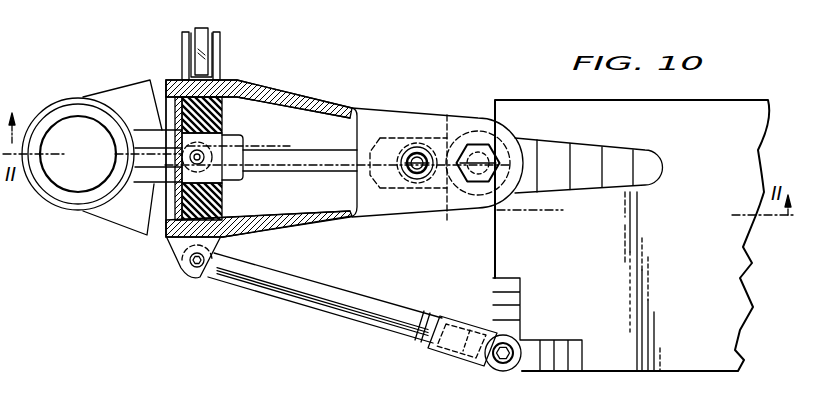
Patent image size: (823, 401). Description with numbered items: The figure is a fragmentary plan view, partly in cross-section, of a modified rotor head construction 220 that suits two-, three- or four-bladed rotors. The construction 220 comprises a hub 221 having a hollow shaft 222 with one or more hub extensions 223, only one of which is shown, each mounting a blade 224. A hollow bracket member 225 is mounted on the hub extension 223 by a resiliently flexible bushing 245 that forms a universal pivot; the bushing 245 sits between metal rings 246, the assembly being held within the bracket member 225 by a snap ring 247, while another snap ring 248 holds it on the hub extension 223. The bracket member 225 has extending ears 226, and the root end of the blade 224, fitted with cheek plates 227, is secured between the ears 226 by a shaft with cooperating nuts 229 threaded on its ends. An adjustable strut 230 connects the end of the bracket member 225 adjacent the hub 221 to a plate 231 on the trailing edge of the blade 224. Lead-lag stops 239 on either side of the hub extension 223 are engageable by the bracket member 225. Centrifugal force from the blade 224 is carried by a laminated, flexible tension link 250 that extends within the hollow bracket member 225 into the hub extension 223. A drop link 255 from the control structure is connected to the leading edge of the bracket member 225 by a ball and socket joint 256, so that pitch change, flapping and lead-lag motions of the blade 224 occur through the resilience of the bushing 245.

The rotor head construction 220 is at (325, 62).
The hub 221 is at (57, 96).
The hollow shaft 222 is at (52, 114).
The hub extension 223 is at (136, 167).
The blade 224 is at (667, 362).
The bracket member 225 is at (410, 107).
The ears 226 is at (473, 122).
The cheek plates 227 is at (648, 141).
The nuts 229 is at (486, 152).
The adjustable strut 230 is at (293, 303).
The plate 231 is at (527, 360).
The lead-lag stops 239 is at (120, 100).
The resiliently flexible bushing 245 is at (222, 117).
The metal rings 246 is at (219, 205).
The snap ring 247 is at (164, 96).
The snap ring 248 is at (243, 134).
The tension link 250 is at (292, 162).
The drop link 255 is at (201, 55).
The ball and socket joint 256 is at (186, 30).